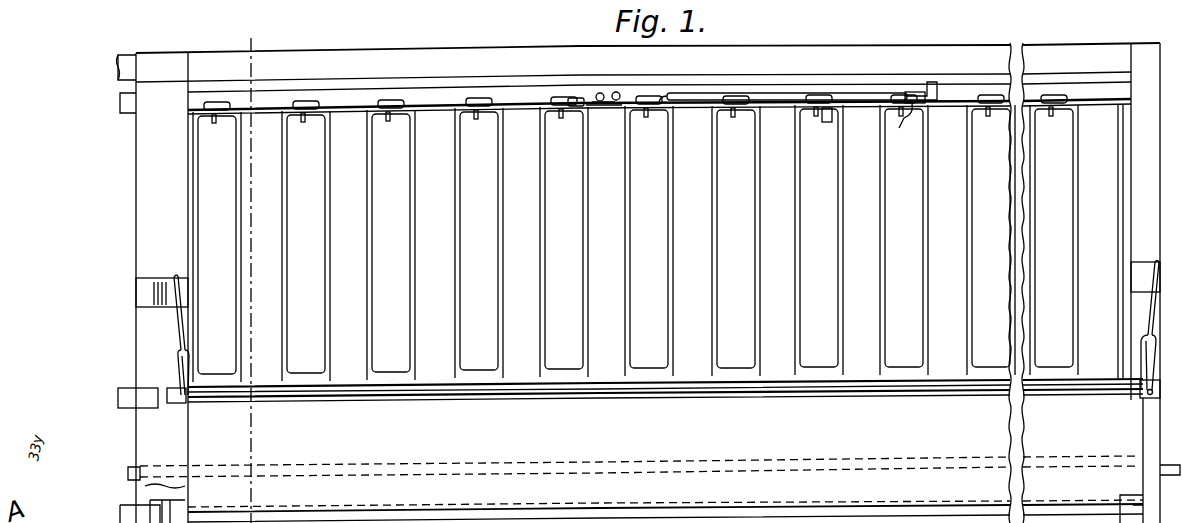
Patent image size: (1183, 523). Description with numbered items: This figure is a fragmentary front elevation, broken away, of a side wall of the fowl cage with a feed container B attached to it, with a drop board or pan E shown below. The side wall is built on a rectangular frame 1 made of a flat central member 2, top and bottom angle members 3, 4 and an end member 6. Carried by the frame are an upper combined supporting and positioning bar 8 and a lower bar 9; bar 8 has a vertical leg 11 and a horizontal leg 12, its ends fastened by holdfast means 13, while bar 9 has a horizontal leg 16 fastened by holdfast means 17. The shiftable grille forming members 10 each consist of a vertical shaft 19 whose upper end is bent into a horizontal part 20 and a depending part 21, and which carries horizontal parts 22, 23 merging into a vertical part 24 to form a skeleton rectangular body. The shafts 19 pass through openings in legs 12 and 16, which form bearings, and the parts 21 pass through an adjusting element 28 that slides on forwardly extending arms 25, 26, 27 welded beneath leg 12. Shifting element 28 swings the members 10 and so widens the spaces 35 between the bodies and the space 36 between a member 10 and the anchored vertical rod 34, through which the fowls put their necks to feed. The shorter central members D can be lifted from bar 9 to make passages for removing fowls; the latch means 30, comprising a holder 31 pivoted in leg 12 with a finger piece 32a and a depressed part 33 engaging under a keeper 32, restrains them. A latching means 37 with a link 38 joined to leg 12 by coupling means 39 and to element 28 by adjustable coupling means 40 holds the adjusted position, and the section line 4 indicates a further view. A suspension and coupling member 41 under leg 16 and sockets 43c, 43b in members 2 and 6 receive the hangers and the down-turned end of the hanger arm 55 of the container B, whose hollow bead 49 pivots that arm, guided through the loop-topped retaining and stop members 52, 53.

The rectangular frame 1 is at (420, 59).
The central frame member 2 is at (140, 208).
The top frame member 3 is at (509, 62).
The bottom frame member 4 is at (244, 36).
The end frame member 6 is at (1146, 150).
The upper combined supporting and positioning bar 8 is at (345, 100).
The lower combined supporting and positioning bar 9 is at (120, 401).
The shiftable grille forming member 10 is at (454, 323).
The vertical leg of bar 8 11 is at (438, 100).
The horizontal leg of bar 8 12 is at (424, 118).
The holdfast means 13 is at (1144, 92).
The horizontal leg of bar 9 16 is at (438, 364).
The holdfast means 17 is at (1150, 392).
The vertical shaft 19 is at (290, 294).
The angularly disposed horizontal part 20 is at (296, 102).
The depending vertical part 21 is at (314, 120).
The upper horizontal part 22 is at (490, 120).
The lower horizontal part 23 is at (490, 378).
The vertical body part 24 is at (500, 216).
The forwardly extending arm 25 is at (242, 118).
The forwardly extending arm 26 is at (832, 114).
The forwardly extending arm 27 is at (1066, 118).
The adjusting element 28 is at (524, 102).
The shiftable latch or abutment means 30 is at (779, 89).
The holder 31 is at (714, 94).
The keeper 32 is at (921, 92).
The finger piece 32a is at (936, 80).
The depressed part 33 is at (922, 108).
The vertical rod 34 is at (170, 322).
The spaces 35 is at (740, 388).
The space 36 is at (1095, 245).
The latching means 37 is at (618, 96).
The link 38 is at (598, 108).
The coupling means 39 is at (574, 96).
The adjustable coupling means 40 is at (602, 96).
The combined suspension and coupling member 41 is at (180, 478).
The vertically extending socket 43c is at (138, 296).
The vertically extending socket 43b is at (1142, 274).
The hollow bead 49 is at (506, 394).
The combined retaining and stop member 52 is at (176, 370).
The combined retaining and stop member 53 is at (1140, 355).
The combined hanger and coupling arm 55 is at (1148, 318).
The feed container B is at (194, 453).
The central set grille forming members D is at (128, 464).
The drop board or pan E is at (665, 505).